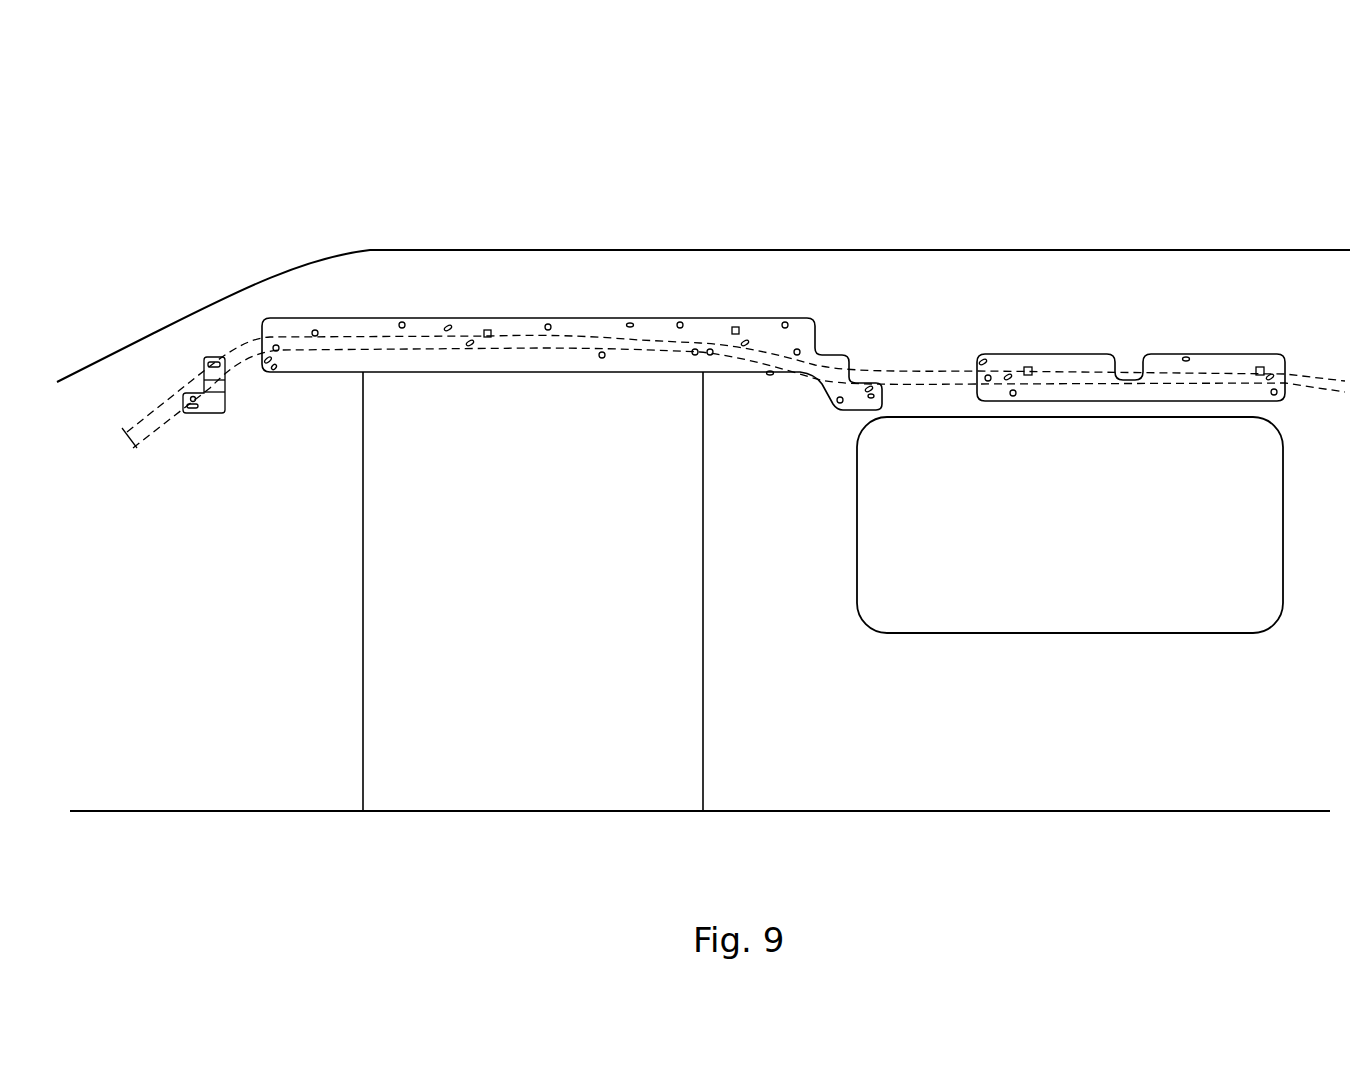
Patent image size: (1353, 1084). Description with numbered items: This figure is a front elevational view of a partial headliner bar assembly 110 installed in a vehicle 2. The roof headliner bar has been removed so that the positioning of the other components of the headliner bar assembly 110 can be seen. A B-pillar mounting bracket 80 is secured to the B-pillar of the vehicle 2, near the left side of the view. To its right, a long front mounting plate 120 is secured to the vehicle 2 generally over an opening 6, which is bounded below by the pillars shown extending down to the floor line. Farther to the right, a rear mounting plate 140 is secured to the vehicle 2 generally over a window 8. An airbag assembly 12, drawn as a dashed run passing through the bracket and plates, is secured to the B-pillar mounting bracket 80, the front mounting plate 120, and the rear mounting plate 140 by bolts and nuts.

The vehicle 2 is at (168, 312).
The opening 6 is at (440, 752).
The window 8 is at (1050, 568).
The airbag assembly 12 is at (170, 408).
The B-pillar mounting bracket 80 is at (210, 343).
The headliner bar assembly 110 is at (888, 138).
The front mounting plate 120 is at (578, 305).
The rear mounting plate 140 is at (1185, 333).